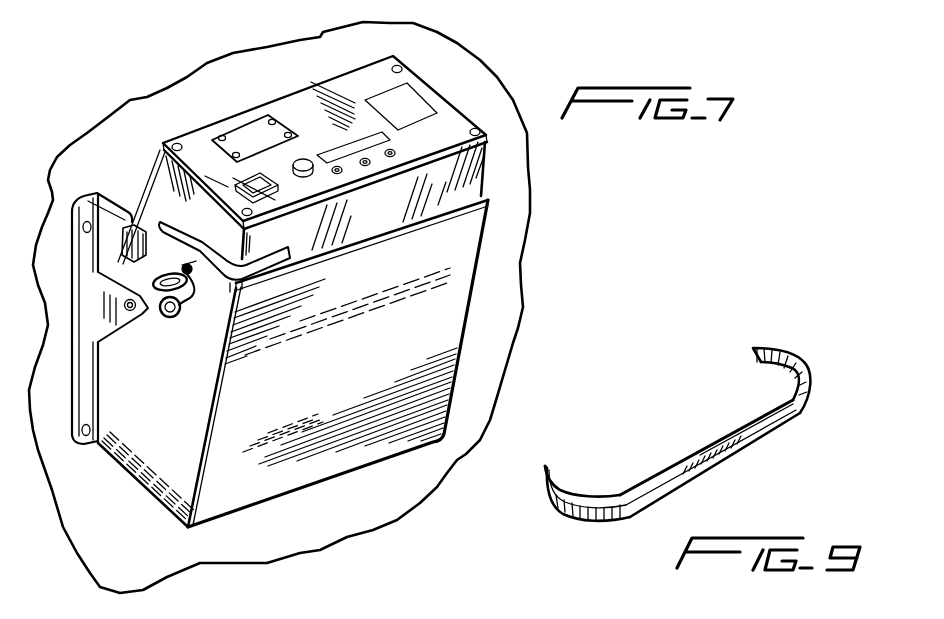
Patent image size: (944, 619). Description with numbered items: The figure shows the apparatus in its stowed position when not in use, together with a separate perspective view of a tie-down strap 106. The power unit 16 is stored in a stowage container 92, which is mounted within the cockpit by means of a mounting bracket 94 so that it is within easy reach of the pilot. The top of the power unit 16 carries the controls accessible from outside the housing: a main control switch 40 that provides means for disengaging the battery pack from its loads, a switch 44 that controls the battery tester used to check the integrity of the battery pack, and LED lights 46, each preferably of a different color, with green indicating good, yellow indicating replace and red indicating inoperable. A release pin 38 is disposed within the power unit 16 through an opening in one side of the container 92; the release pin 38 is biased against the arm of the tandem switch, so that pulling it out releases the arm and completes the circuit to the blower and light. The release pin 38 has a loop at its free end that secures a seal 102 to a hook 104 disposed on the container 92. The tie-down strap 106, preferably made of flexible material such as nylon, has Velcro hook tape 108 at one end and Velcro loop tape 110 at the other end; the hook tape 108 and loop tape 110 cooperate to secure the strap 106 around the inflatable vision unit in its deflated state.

In FIG. 7, the power unit 16 is at (445, 68).
In FIG. 7, the release pin 38 is at (131, 322).
In FIG. 7, the main control switch 40 is at (250, 172).
In FIG. 7, the switch 44 is at (305, 158).
In FIG. 7, the LED lights 46 is at (342, 173).
In FIG. 7, the stowage container 92 is at (480, 286).
In FIG. 7, the mounting bracket 94 is at (100, 190).
In FIG. 7, the seal 102 is at (190, 316).
In FIG. 7, the hook 104 is at (228, 290).
In FIG. 9, the tie-down strap 106 is at (803, 367).
In FIG. 9, the hook tape 108 is at (770, 347).
In FIG. 9, the loop tape 110 is at (553, 508).